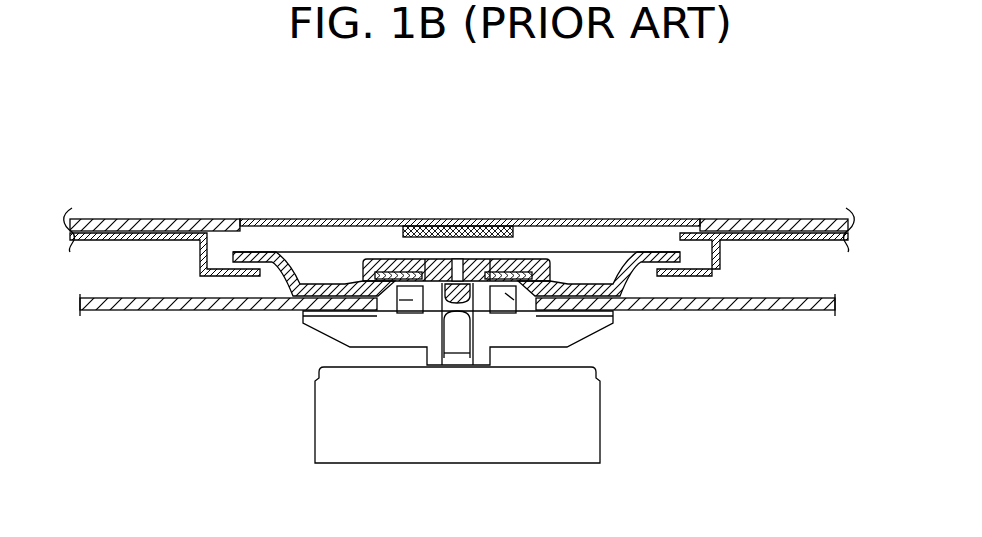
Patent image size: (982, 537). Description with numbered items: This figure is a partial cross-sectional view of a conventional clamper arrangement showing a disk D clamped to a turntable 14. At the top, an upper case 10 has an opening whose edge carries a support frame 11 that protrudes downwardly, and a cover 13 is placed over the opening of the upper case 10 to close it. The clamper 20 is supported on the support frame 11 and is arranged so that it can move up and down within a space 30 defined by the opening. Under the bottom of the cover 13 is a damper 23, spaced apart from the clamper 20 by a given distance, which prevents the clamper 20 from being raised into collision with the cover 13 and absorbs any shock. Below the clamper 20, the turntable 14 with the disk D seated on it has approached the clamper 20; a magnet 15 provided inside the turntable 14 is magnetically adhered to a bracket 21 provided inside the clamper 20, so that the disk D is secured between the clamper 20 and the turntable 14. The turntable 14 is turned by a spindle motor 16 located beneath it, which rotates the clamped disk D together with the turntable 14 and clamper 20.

The upper case 10 is at (783, 227).
The support frame 11 is at (720, 259).
The cover 13 is at (642, 223).
The turntable 14 is at (593, 320).
The magnet 15 is at (400, 291).
The spindle motor 16 is at (588, 417).
The clamper 20 is at (577, 283).
The bracket 21 is at (527, 280).
The damper 23 is at (418, 240).
The space 30 is at (307, 240).
The disk D is at (793, 311).